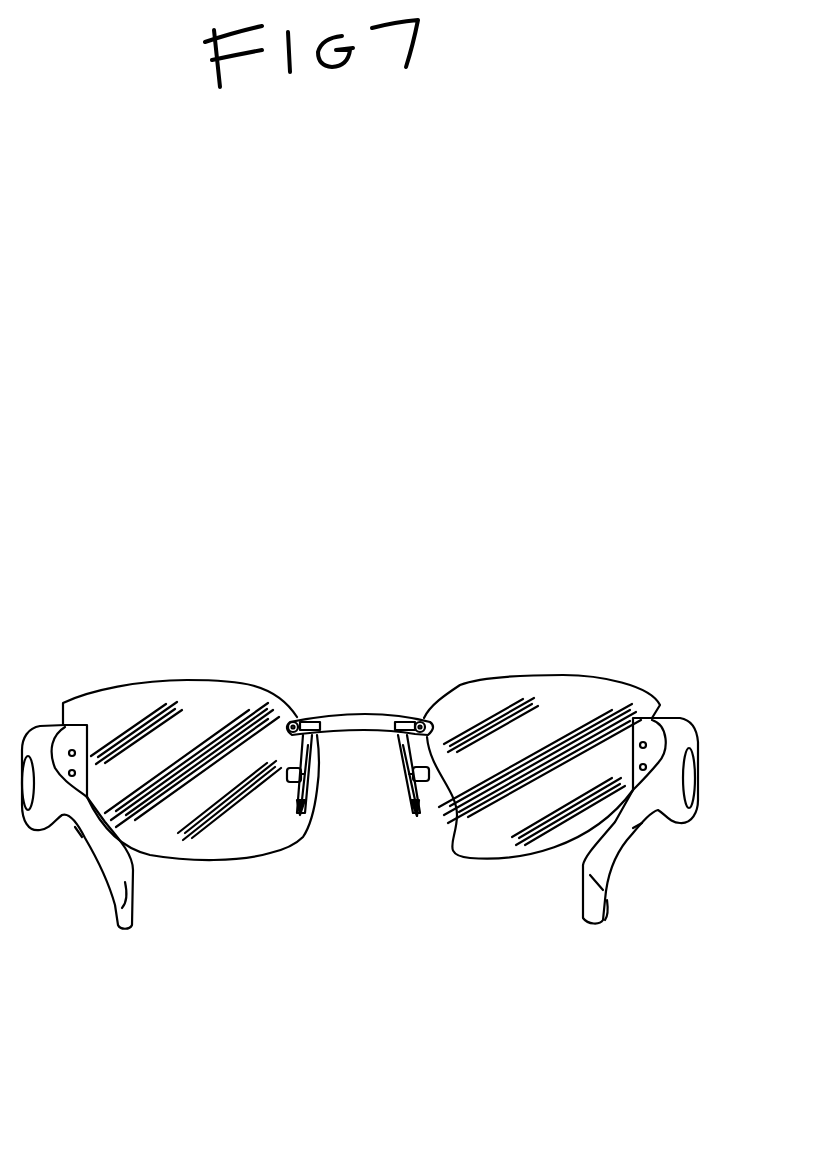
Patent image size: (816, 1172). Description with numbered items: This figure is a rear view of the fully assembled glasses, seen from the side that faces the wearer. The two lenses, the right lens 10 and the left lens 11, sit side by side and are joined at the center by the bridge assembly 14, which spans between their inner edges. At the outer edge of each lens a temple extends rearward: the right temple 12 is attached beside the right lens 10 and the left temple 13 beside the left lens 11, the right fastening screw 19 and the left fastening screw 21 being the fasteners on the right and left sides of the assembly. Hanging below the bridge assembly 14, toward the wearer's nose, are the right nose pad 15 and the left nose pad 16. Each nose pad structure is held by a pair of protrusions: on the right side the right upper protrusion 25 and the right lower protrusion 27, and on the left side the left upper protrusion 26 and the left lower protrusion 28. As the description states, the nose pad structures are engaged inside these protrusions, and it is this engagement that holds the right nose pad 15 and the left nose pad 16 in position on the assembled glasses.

The right lens 10 is at (531, 699).
The left lens 11 is at (181, 707).
The right temple 12 is at (597, 917).
The left temple 13 is at (118, 910).
The bridge assembly 14 is at (357, 712).
The right nose pad 15 is at (404, 828).
The left nose pad 16 is at (313, 845).
The right fastening screw 19 is at (413, 714).
The left fastening screw 21 is at (283, 687).
The right upper protrusion 25 is at (394, 714).
The left upper protrusion 26 is at (318, 722).
The right lower protrusion 27 is at (431, 778).
The left lower protrusion 28 is at (288, 778).